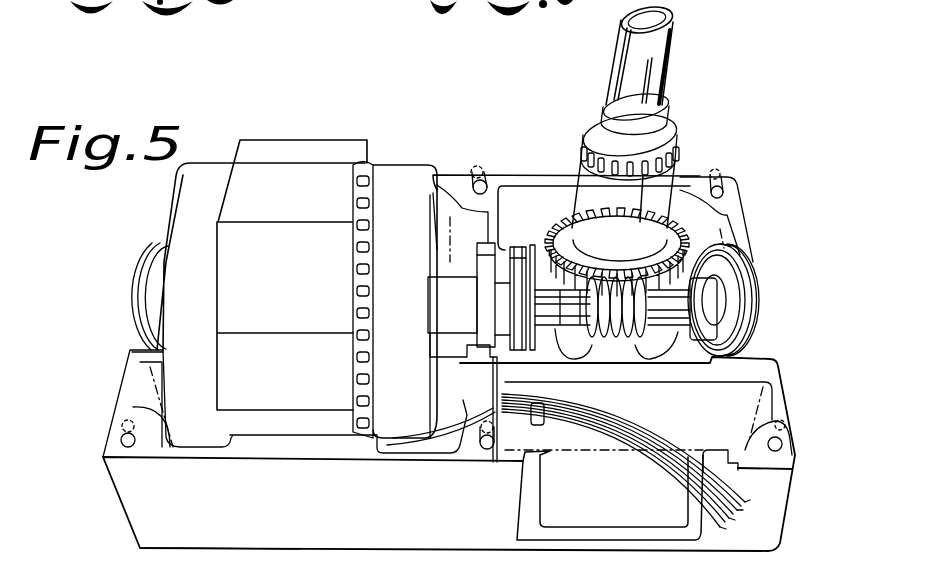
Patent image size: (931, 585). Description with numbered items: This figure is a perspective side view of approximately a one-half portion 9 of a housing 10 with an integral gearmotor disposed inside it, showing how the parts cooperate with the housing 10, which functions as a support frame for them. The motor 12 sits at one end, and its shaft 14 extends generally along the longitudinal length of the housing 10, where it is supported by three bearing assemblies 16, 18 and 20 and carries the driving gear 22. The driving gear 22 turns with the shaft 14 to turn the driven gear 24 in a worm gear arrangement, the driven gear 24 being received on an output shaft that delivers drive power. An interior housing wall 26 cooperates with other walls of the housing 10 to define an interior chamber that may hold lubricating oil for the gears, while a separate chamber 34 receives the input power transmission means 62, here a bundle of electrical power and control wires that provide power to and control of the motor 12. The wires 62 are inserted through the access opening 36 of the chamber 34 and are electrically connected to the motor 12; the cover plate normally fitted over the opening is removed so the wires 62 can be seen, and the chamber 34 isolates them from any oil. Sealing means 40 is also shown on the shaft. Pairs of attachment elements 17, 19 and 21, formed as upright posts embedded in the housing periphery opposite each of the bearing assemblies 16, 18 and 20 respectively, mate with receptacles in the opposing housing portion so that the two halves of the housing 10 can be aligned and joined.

The housing portion 9 is at (162, 551).
The housing 10 is at (108, 504).
The motor 12 is at (320, 148).
The shaft 14 is at (430, 253).
The bearing assembly 16 is at (138, 262).
The attachment means 17 is at (112, 449).
The bearing assembly 18 is at (527, 352).
The attachment means 19 is at (486, 181).
The bearing assembly 20 is at (733, 217).
The attachment means 21 is at (730, 176).
The driving gear 22 is at (616, 348).
The driven gear 24 is at (612, 78).
The interior housing wall 26 is at (525, 387).
The chamber 34 is at (660, 428).
The access opening 36 is at (546, 502).
The sealing means 40 is at (480, 306).
The input power transmission means 62 is at (683, 498).